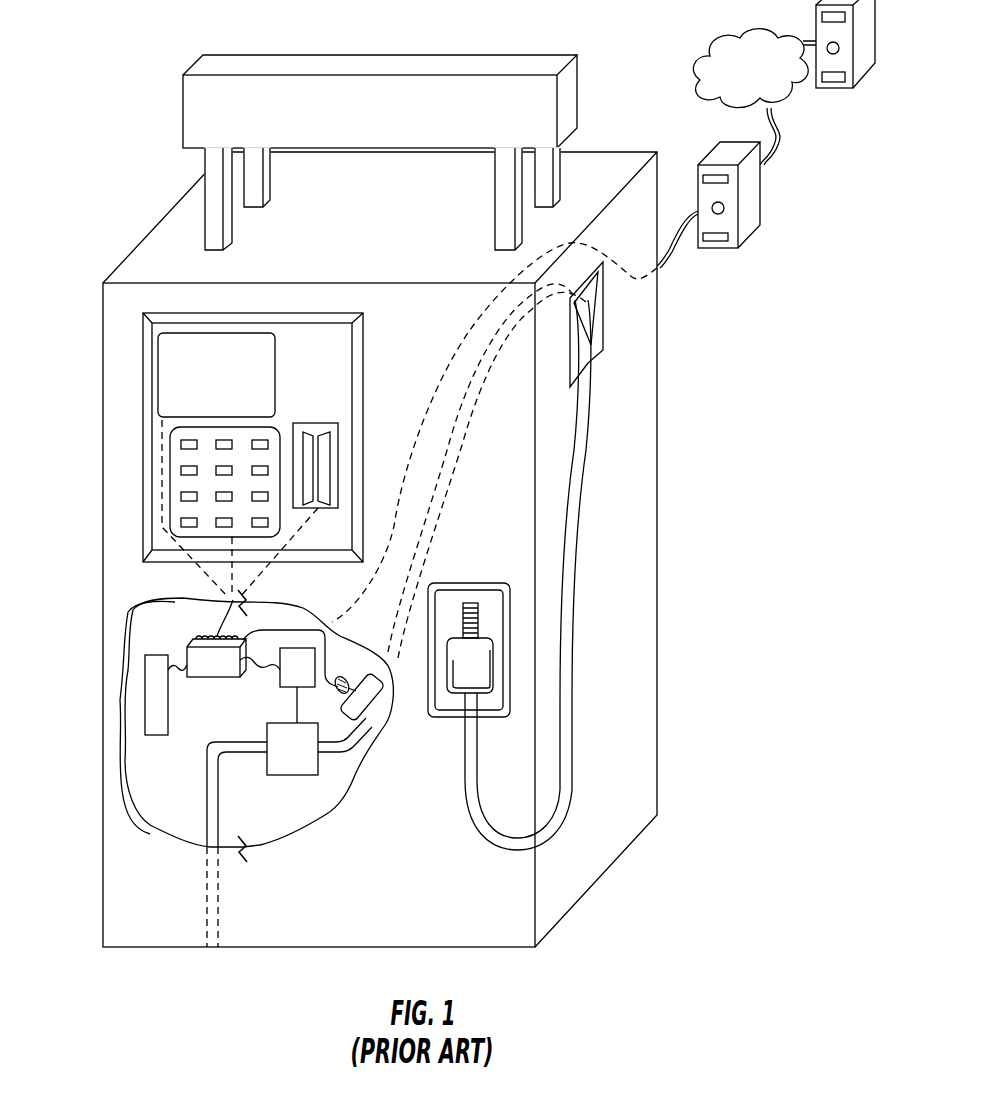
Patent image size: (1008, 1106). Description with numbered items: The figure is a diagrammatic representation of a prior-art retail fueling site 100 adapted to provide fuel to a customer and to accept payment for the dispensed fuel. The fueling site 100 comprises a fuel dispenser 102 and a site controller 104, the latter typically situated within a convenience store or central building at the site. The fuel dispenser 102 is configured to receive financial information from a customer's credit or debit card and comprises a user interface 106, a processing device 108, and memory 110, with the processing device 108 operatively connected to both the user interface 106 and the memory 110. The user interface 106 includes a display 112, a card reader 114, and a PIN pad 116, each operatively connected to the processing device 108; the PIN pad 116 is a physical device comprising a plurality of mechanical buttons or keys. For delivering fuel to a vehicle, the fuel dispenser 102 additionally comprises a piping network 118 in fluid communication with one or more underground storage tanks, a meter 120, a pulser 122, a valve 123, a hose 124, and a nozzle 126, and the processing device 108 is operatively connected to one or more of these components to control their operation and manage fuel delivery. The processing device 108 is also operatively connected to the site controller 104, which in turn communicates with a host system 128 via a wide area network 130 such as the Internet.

The fueling site 100 is at (705, 410).
The fuel dispenser 102 is at (103, 251).
The site controller 104 is at (747, 235).
The user interface 106 is at (306, 359).
The processing device 108 is at (196, 676).
The memory 110 is at (168, 723).
The display 112 is at (193, 381).
The card reader 114 is at (305, 426).
The PIN pad 116 is at (264, 438).
The piping network 118 is at (430, 543).
The meter 120 is at (276, 761).
The pulser 122 is at (308, 665).
The valve 123 is at (380, 706).
The hose 124 is at (582, 658).
The nozzle 126 is at (478, 614).
The host system 128 is at (832, 88).
The wide area network 130 is at (740, 79).